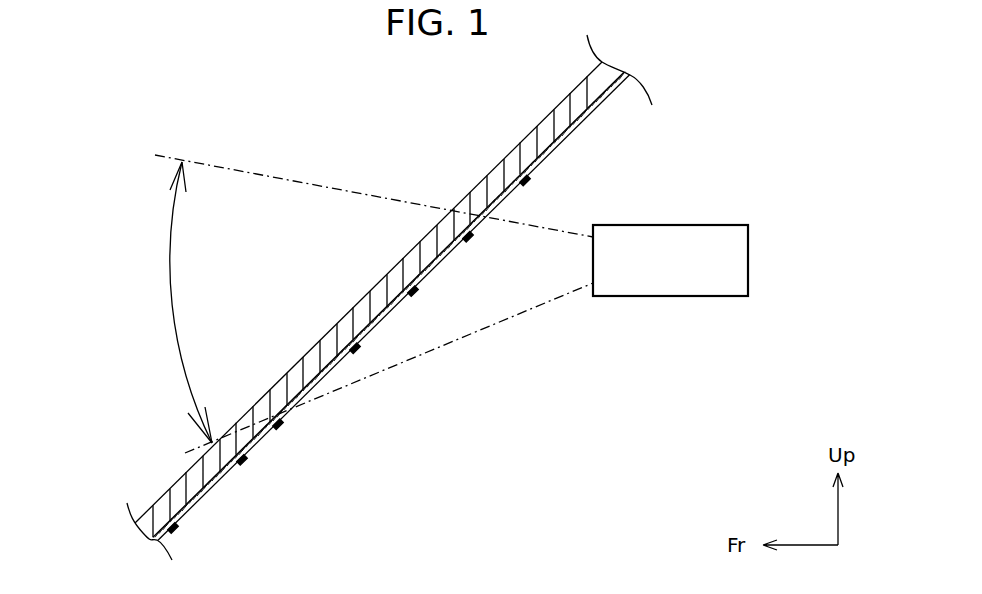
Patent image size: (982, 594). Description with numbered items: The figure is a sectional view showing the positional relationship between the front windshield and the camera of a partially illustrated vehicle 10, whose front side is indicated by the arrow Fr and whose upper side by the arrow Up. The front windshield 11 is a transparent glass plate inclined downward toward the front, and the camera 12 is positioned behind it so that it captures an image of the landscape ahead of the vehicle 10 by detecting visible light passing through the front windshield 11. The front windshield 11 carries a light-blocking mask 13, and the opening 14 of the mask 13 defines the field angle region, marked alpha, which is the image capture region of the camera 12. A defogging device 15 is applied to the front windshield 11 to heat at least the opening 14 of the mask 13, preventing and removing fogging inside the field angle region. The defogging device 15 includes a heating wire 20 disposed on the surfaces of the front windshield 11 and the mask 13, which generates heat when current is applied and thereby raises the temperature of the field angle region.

The vehicle 10 is at (136, 94).
The front windshield 11 is at (508, 155).
The camera 12 is at (718, 297).
The mask 13 is at (225, 475).
The opening 14 is at (393, 313).
The defogging device 15 is at (513, 378).
The heating wire 20 is at (285, 432).